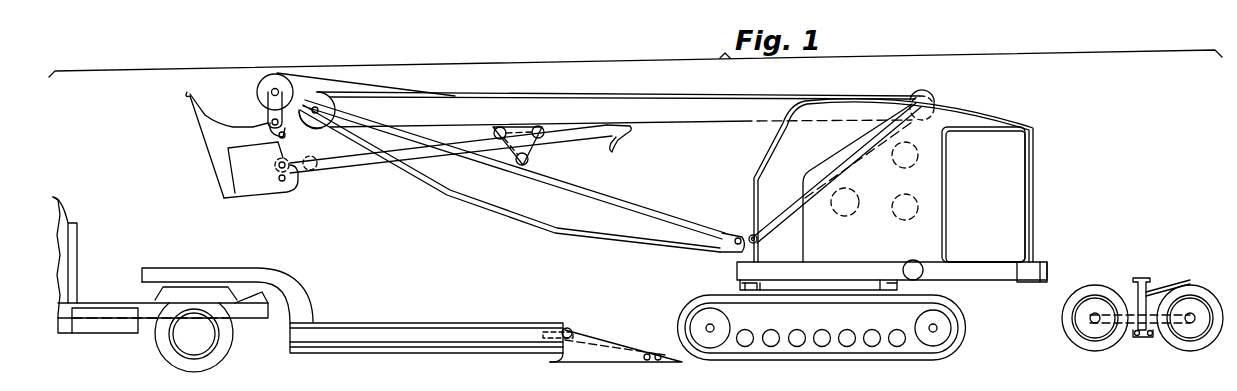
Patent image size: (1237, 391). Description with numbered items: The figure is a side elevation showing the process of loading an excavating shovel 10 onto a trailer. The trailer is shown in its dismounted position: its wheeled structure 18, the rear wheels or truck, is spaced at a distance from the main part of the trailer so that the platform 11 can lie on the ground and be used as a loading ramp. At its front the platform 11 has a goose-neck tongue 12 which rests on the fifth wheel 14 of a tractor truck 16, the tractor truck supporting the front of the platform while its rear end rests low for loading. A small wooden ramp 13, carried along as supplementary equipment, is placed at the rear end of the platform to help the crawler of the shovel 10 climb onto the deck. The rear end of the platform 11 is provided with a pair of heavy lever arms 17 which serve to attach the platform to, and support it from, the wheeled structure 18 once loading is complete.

The excavating shovel 10 is at (1008, 192).
The platform 11 is at (424, 347).
The goose-neck tongue 12 is at (293, 298).
The wooden ramps 13 is at (604, 346).
The fifth wheel 14 is at (163, 298).
The tractor truck 16 is at (95, 329).
The lever arms 17 is at (571, 355).
The wheeled structure 18 is at (1135, 372).